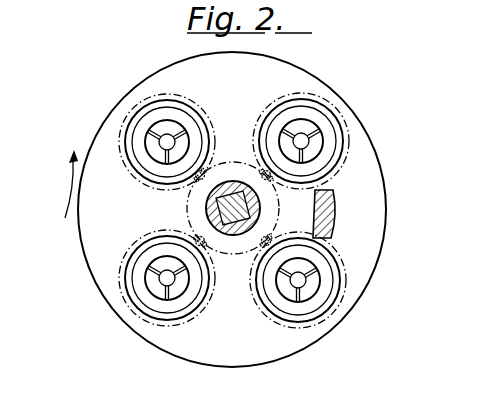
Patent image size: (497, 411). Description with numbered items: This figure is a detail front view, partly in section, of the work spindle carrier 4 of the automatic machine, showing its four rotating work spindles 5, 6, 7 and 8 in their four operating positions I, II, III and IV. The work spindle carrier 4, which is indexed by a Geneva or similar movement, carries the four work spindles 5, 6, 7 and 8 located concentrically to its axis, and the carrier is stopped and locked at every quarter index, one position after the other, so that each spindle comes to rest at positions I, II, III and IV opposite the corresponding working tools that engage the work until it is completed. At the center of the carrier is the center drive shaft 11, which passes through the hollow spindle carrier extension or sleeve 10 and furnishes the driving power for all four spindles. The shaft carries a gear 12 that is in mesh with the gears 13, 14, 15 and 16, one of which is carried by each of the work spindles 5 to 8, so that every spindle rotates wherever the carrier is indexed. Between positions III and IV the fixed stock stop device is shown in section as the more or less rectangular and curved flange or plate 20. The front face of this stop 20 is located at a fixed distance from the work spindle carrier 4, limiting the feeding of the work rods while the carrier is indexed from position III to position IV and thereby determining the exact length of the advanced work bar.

The first operating position I is at (133, 314).
The second operating position II is at (123, 110).
The third operating position III is at (350, 128).
The fourth operating position IV is at (343, 301).
The work spindle carrier 4 is at (303, 70).
The work spindle 5 is at (163, 282).
The work spindle 6 is at (163, 134).
The work spindle 7 is at (312, 143).
The work spindle 8 is at (300, 282).
The hollow spindle carrier extension 10 is at (233, 235).
The center drive shaft 11 is at (233, 181).
The gear 12 is at (186, 212).
The gear 13 is at (172, 336).
The gear 14 is at (112, 131).
The gear 15 is at (354, 155).
The gear 16 is at (353, 285).
The stock stop 20 is at (342, 212).